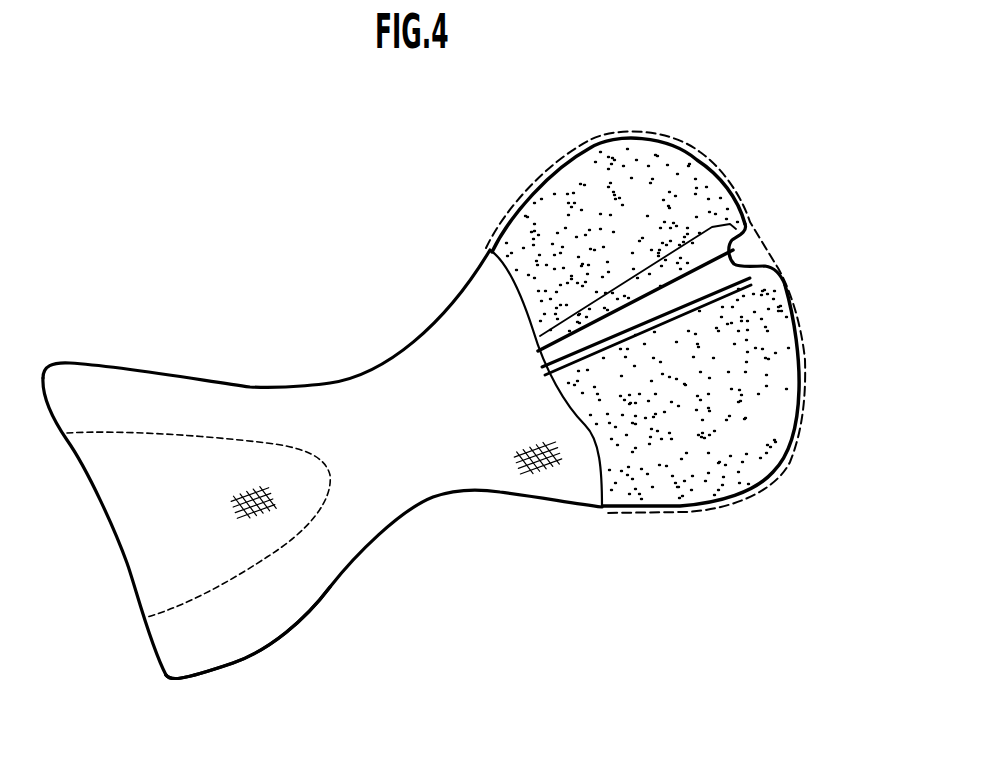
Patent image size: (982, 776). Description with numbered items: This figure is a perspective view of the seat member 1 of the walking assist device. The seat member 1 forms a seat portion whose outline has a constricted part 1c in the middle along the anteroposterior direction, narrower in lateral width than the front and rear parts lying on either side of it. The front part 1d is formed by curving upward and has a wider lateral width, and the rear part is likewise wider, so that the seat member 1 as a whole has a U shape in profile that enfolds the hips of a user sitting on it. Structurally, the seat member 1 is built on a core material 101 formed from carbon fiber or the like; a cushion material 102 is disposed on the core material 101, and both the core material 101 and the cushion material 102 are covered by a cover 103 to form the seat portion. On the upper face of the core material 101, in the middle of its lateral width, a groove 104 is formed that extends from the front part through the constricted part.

The seat member 1 is at (347, 332).
The constricted part 1c is at (432, 507).
The front part 1d is at (256, 652).
The core material 101 is at (714, 243).
The cushion material 102 is at (633, 152).
The cover 103 is at (543, 488).
The groove 104 is at (760, 264).